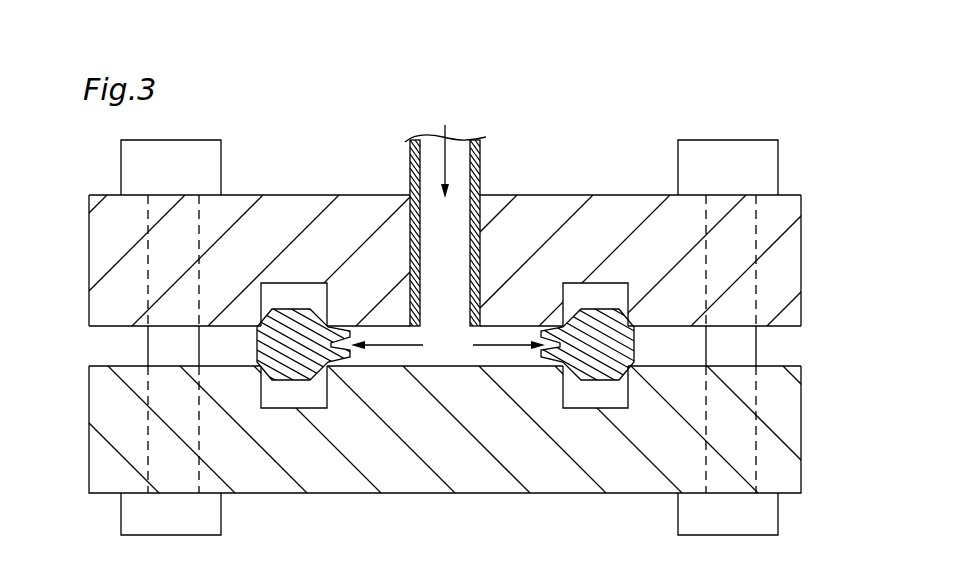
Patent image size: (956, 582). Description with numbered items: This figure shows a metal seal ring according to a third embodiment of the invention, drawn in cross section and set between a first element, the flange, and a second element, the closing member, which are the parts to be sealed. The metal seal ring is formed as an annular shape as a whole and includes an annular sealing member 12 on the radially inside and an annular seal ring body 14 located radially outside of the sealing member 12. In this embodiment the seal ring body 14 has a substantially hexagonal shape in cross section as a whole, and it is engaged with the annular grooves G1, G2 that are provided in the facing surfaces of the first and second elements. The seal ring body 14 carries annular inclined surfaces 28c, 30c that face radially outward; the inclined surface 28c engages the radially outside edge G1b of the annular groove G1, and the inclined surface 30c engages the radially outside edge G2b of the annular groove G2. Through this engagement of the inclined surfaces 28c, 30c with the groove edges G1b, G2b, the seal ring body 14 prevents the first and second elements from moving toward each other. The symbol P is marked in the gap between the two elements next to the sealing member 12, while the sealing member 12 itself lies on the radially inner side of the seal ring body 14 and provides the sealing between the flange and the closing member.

The sealing member 12 is at (337, 318).
The seal ring body 14 is at (294, 388).
The annular groove G1 is at (288, 290).
The annular groove G2 is at (307, 398).
The radially outside edge G1b is at (595, 305).
The radially outside edge G2b is at (596, 378).
The annular inclined surface 28c is at (603, 333).
The annular inclined surface 30c is at (598, 366).
The pressure P is at (448, 346).